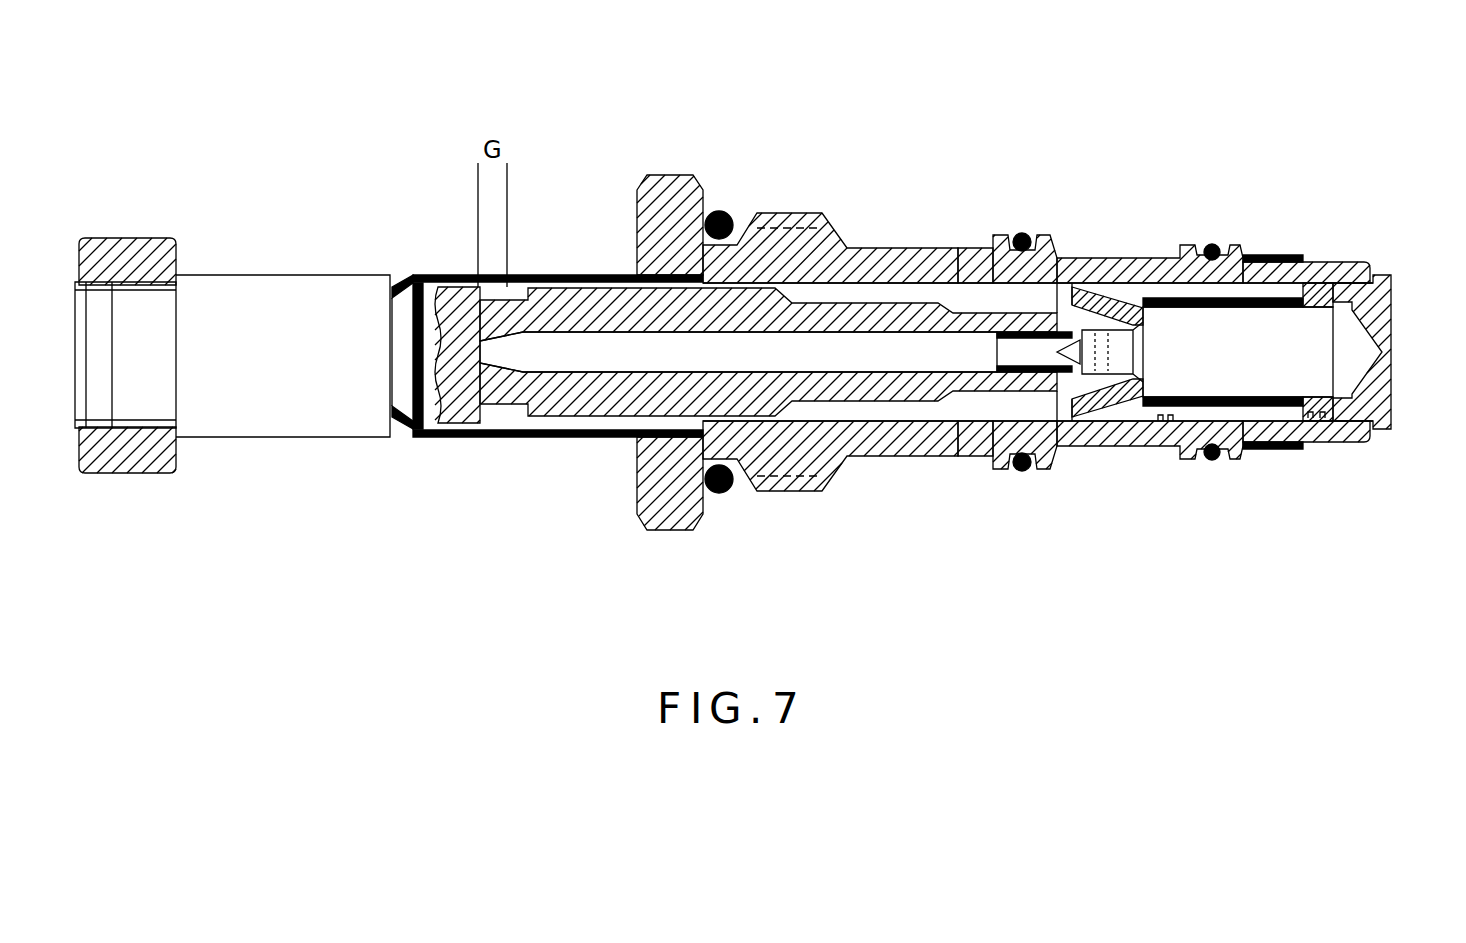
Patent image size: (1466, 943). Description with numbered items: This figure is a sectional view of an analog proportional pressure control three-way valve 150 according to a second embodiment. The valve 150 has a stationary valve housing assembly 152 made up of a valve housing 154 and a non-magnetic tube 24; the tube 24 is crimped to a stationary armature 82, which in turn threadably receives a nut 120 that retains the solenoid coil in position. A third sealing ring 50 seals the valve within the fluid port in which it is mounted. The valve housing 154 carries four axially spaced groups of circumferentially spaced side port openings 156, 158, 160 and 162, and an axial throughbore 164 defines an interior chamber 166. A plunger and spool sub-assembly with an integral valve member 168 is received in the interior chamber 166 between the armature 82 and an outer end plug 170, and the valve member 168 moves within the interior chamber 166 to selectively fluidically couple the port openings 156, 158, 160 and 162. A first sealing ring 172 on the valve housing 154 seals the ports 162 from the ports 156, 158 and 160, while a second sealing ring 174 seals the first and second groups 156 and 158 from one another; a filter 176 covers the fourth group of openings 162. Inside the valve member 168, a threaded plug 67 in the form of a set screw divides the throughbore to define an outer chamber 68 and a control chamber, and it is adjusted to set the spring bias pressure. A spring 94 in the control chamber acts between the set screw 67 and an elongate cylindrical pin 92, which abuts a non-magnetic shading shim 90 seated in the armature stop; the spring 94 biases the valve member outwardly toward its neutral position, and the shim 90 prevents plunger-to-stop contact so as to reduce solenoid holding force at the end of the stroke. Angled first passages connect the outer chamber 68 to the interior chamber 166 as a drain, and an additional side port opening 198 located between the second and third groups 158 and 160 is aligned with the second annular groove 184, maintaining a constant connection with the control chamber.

The tube 24 is at (543, 277).
The third sealing ring 50 is at (722, 505).
The threaded plug 67 is at (1125, 348).
The outer chamber 68 is at (1278, 335).
The stationary armature 82 is at (330, 440).
The shading shim 90 is at (488, 377).
The pin 92 is at (598, 352).
The spring 94 is at (1017, 395).
The nut 120 is at (126, 478).
The analog proportional pressure control three-way valve 150 is at (1040, 168).
The stationary valve housing assembly 152 is at (847, 233).
The valve housing 154 is at (900, 262).
The first group of side port openings 156 is at (960, 462).
The second group of side port openings 158 is at (1072, 455).
The third group of side port openings 160 is at (1160, 458).
The fourth group of side port openings 162 is at (1262, 455).
The axial throughbore 164 is at (1033, 345).
The interior chamber 166 is at (908, 405).
The valve member 168 is at (1168, 420).
The outer end plug 170 is at (1090, 257).
The first sealing ring 172 is at (1213, 458).
The second sealing ring 174 is at (1022, 475).
The filter 176 is at (1285, 255).
The second annular groove 184 is at (1133, 270).
The additional side port opening 198 is at (1110, 400).